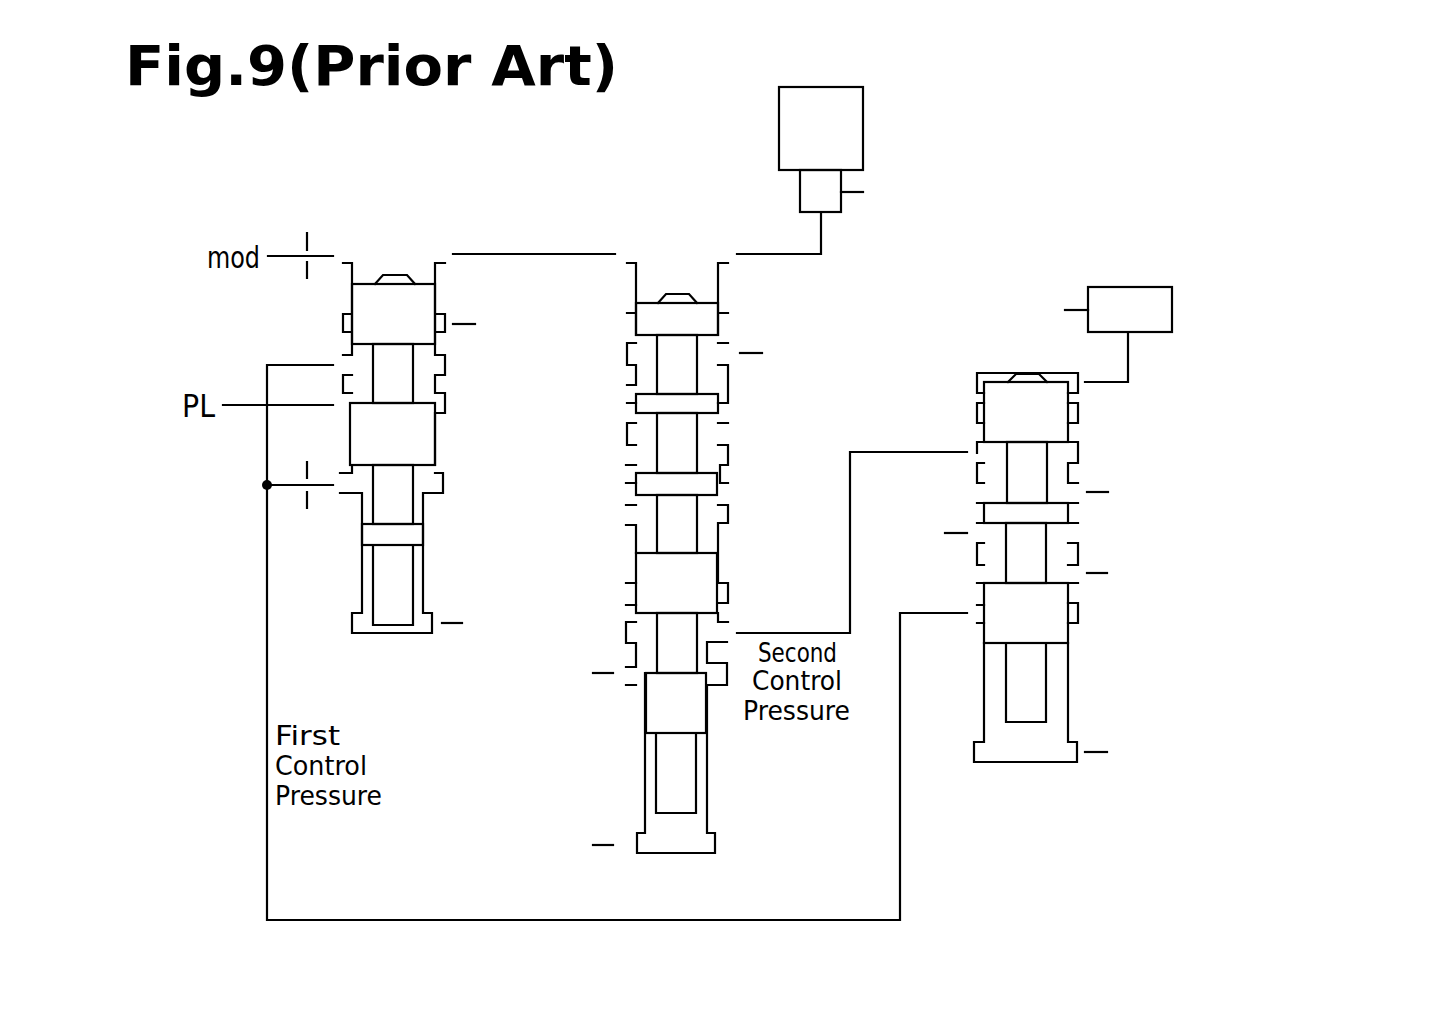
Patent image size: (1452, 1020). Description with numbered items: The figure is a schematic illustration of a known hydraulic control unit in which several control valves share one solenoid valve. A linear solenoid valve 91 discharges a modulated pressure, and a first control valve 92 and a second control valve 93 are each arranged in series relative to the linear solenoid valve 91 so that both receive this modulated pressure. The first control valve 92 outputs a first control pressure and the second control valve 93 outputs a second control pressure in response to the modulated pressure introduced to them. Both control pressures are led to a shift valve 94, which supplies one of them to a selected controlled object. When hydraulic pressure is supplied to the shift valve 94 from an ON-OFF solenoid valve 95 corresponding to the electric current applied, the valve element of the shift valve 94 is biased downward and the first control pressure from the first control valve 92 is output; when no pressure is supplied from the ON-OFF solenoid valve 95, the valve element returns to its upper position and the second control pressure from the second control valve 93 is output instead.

The linear solenoid valve 91 is at (863, 128).
The first control valve 92 is at (343, 245).
The second control valve 93 is at (627, 245).
The shift valve 94 is at (995, 372).
The ON-OFF solenoid valve 95 is at (1122, 288).